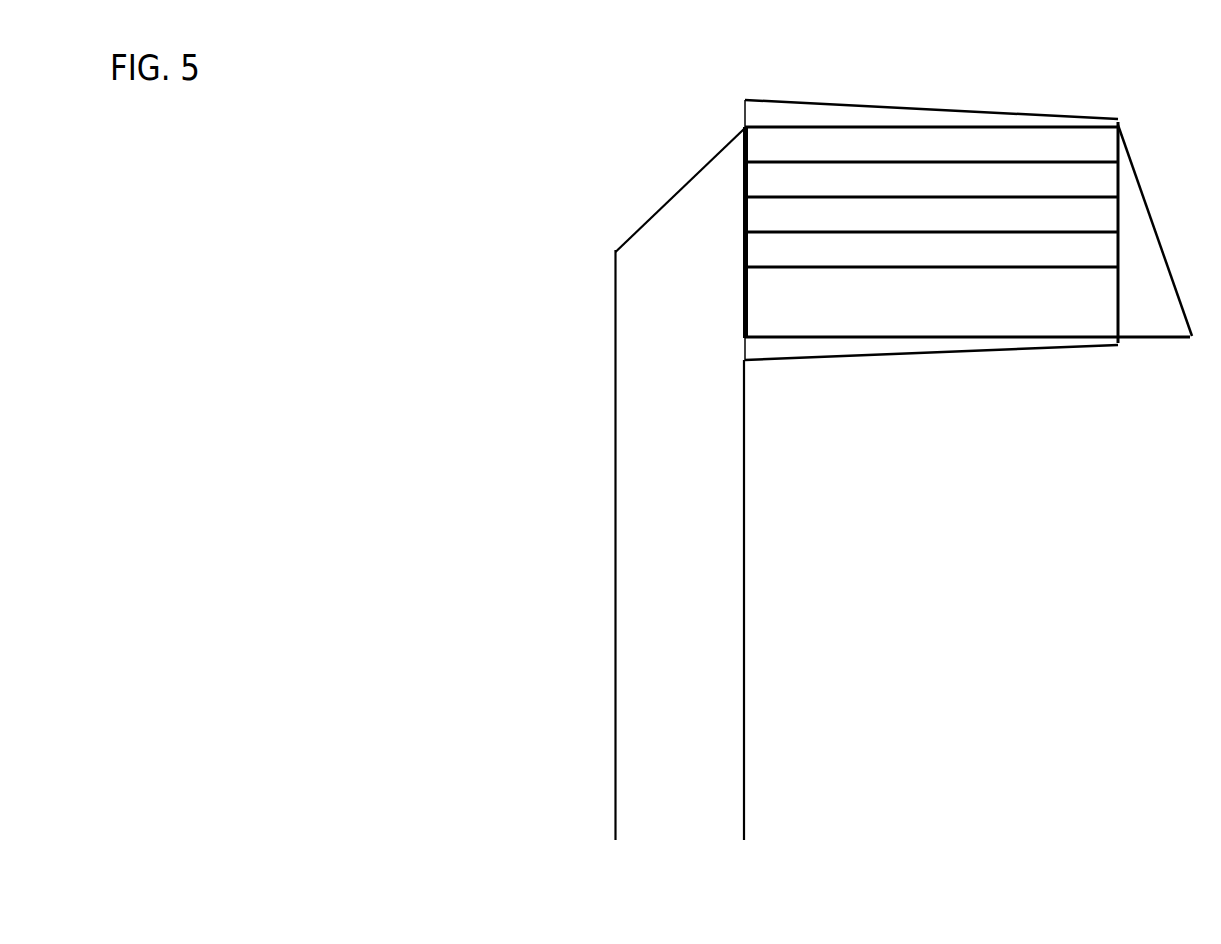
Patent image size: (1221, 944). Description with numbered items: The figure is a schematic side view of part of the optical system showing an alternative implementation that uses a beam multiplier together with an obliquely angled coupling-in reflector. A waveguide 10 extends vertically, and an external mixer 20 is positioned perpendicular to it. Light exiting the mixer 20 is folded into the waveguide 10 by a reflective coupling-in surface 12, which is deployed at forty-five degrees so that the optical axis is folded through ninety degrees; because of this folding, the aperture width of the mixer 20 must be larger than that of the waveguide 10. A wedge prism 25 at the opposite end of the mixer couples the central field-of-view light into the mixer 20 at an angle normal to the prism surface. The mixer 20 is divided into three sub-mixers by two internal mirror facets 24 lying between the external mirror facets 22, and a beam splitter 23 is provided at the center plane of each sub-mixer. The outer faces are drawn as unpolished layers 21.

The substrate / light guide 10 is at (680, 547).
The coupling-in reflector 12 is at (680, 190).
The external mixer 20 is at (932, 271).
The unpolished layer 21 is at (931, 219).
The external mirror facets 22 is at (967, 221).
The beam splitter 23 is at (931, 220).
The internal mirror facets 24 is at (931, 219).
The wedge prism 25 is at (1156, 230).